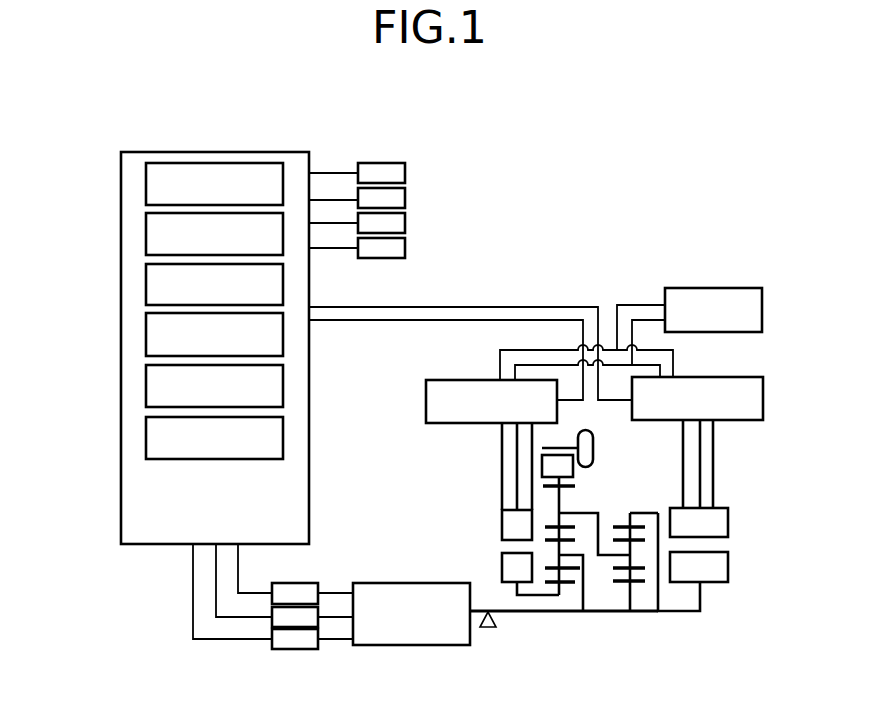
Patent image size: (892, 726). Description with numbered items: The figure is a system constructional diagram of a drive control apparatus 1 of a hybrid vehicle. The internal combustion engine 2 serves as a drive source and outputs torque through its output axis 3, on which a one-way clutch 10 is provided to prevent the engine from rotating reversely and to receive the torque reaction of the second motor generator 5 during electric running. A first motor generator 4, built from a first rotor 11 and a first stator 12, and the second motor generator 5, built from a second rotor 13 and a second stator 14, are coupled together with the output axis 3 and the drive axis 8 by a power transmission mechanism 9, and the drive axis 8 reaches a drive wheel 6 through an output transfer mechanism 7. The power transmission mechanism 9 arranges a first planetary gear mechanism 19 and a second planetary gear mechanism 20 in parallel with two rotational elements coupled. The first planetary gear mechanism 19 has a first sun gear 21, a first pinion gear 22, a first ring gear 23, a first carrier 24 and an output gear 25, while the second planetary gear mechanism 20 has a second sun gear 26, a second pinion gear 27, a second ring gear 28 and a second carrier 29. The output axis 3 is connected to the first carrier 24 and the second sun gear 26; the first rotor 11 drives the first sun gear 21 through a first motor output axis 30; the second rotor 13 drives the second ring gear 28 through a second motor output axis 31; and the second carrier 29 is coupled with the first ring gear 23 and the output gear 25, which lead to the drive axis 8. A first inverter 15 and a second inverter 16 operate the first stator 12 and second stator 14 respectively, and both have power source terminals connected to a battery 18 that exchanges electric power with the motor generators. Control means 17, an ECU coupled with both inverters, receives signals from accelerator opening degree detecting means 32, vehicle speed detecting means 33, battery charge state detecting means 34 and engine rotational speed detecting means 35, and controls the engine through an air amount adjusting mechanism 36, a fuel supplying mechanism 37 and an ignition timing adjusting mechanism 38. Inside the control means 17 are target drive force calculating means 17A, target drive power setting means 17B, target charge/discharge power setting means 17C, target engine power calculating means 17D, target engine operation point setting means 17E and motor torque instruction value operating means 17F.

The drive control apparatus 1 is at (662, 200).
The internal combustion engine 2 is at (412, 645).
The output axis 3 is at (505, 613).
The first motor generator 4 is at (495, 510).
The second motor generator 5 is at (738, 512).
The drive wheel 6 is at (594, 445).
The output transfer mechanism 7 is at (544, 467).
The drive axis 8 is at (570, 432).
The power transmission mechanism 9 is at (750, 478).
The one-way clutch 10 is at (488, 628).
The first rotor 11 is at (502, 565).
The first stator 12 is at (502, 530).
The second rotor 13 is at (728, 561).
The second stator 14 is at (728, 528).
The first inverter 15 is at (467, 380).
The second inverter 16 is at (712, 377).
The control means 17 is at (213, 152).
The target drive force calculating means 17A is at (146, 188).
The target drive power setting means 17B is at (146, 240).
The target charge/discharge power setting means 17C is at (146, 292).
The target engine power calculating means 17D is at (146, 341).
The target engine operation point setting means 17E is at (146, 392).
The motor torque instruction value operating means 17F is at (146, 443).
The battery 18 is at (712, 288).
The first planetary gear mechanism 19 is at (565, 638).
The second planetary gear mechanism 20 is at (650, 638).
The first sun gear 21 is at (570, 583).
The first pinion gear 22 is at (557, 560).
The first ring gear 23 is at (568, 528).
The first carrier 24 is at (587, 597).
The output gear 25 is at (573, 483).
The second sun gear 26 is at (642, 583).
The second pinion gear 27 is at (637, 557).
The second ring gear 28 is at (625, 513).
The second carrier 29 is at (585, 512).
The first motor output axis 30 is at (540, 612).
The second motor output axis 31 is at (680, 609).
The accelerator opening degree detecting means 32 is at (405, 173).
The vehicle speed detecting means 33 is at (405, 198).
The battery charge state detecting means 34 is at (405, 223).
The engine rotational speed detecting means 35 is at (405, 248).
The air amount adjusting mechanism 36 is at (295, 583).
The fuel supplying mechanism 37 is at (300, 614).
The ignition timing adjusting mechanism 38 is at (295, 649).